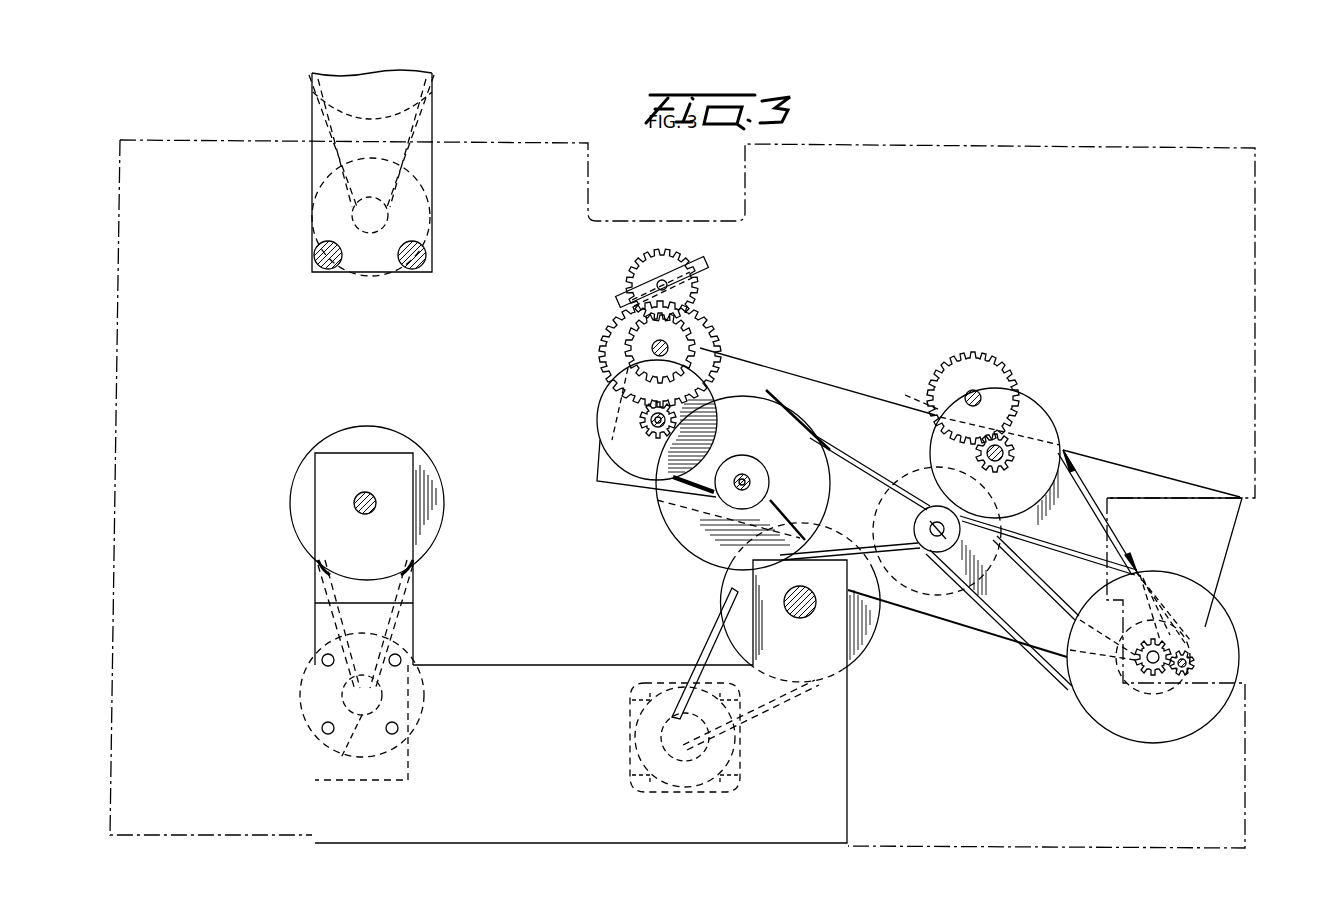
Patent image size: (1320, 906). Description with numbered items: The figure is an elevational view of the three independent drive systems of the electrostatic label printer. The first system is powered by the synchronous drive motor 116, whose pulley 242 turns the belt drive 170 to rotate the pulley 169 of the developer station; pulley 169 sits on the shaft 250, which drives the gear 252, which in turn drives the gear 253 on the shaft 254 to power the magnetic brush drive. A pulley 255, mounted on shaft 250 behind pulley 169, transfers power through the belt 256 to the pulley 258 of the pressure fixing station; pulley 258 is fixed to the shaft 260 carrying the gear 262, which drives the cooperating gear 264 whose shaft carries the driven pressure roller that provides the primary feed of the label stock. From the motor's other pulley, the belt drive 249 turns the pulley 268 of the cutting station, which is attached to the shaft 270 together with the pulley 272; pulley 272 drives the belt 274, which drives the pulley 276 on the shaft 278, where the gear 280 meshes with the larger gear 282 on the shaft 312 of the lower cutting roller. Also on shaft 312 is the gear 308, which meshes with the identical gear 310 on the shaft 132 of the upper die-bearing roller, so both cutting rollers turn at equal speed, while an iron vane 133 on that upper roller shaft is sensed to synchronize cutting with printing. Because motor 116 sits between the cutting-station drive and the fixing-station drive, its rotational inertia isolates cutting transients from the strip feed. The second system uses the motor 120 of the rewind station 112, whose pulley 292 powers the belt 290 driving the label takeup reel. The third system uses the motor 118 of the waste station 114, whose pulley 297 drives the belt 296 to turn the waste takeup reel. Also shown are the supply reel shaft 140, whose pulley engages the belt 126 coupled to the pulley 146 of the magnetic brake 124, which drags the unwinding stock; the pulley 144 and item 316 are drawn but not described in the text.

The rewind station 112 is at (290, 640).
The waste station 114 is at (295, 222).
The drive motor 116 is at (920, 590).
The motor 118 is at (320, 165).
The motor 120 is at (302, 715).
The magnetic brake 124 is at (670, 790).
The belt 126 is at (700, 665).
The shaft 132 is at (656, 283).
The iron vane 133 is at (705, 257).
The shaft 140 is at (810, 618).
The roller 144 is at (722, 596).
The pulley 146 is at (660, 742).
The pulley 169 is at (1225, 628).
The belt drive 170 is at (1033, 658).
The pulley 242 is at (935, 525).
The belt drive 249 is at (842, 453).
The shaft 250 is at (1160, 680).
The gear 252 is at (1140, 670).
The gear 253 is at (1190, 676).
The shaft 254 is at (1195, 663).
The pulley 255 is at (1180, 630).
The belt 256 is at (1085, 485).
The pulley 258 is at (1052, 410).
The shaft 260 is at (1005, 437).
The gear 262 is at (1002, 450).
The gear 264 is at (973, 352).
The pulley 268 is at (760, 405).
The shaft 270 is at (744, 480).
The pulley 272 is at (740, 498).
The belt 274 is at (717, 484).
The pulley 276 is at (622, 448).
The shaft 278 is at (655, 427).
The gear 280 is at (650, 421).
The gear 282 is at (613, 377).
The belt 290 is at (318, 568).
The pulley 292 is at (316, 760).
The belt 296 is at (325, 120).
The pulley 297 is at (368, 233).
The gear 308 is at (675, 333).
The gear 310 is at (646, 257).
The shaft 312 is at (652, 350).
The shaft 316 is at (968, 395).